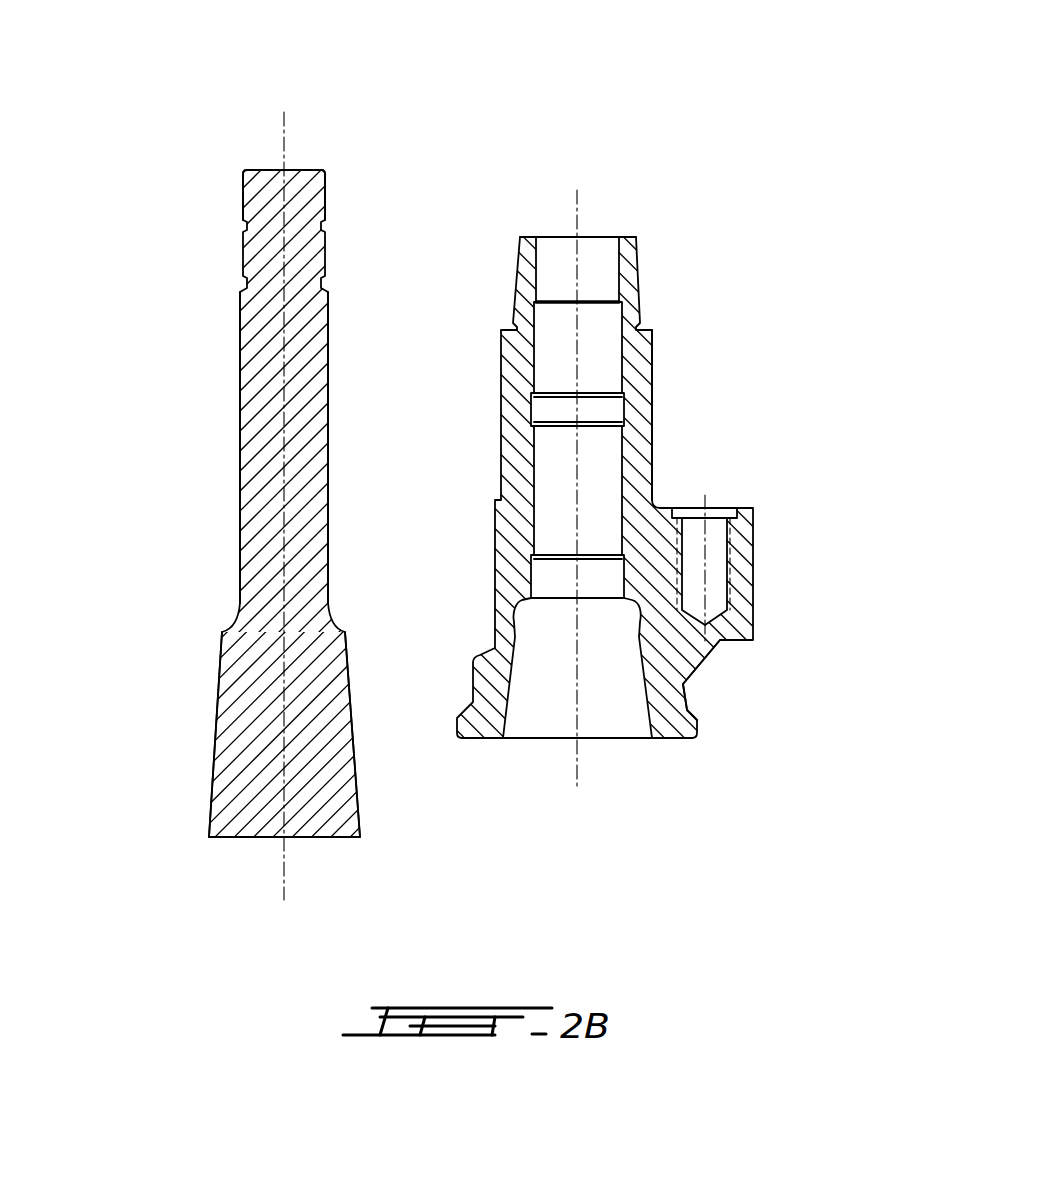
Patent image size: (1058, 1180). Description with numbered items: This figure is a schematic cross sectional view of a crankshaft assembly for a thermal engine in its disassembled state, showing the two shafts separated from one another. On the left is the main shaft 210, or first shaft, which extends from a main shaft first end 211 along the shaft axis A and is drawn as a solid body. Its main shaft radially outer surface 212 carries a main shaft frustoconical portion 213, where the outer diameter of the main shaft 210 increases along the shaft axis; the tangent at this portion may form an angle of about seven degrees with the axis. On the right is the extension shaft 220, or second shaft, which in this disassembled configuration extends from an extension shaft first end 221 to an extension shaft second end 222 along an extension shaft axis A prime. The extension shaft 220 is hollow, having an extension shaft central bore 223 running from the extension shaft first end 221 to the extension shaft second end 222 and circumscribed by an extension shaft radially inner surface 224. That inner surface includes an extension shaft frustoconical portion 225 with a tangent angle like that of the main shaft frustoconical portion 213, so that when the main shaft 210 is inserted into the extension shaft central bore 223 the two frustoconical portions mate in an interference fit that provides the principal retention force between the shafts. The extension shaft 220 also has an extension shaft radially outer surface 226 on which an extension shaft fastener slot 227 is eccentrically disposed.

The main shaft 210 is at (172, 253).
The main shaft first end 211 is at (243, 170).
The main shaft radially outer surface 212 is at (241, 413).
The main shaft frustoconical portion 213 is at (198, 710).
The extension shaft 220 is at (823, 498).
The extension shaft first end 221 is at (636, 237).
The extension shaft second end 222 is at (693, 739).
The extension shaft central bore 223 is at (612, 722).
The extension shaft radially inner surface 224 is at (648, 452).
The extension shaft frustoconical portion 225 is at (652, 695).
The extension shaft radially outer surface 226 is at (640, 306).
The extension shaft fastener slot 227 is at (728, 565).